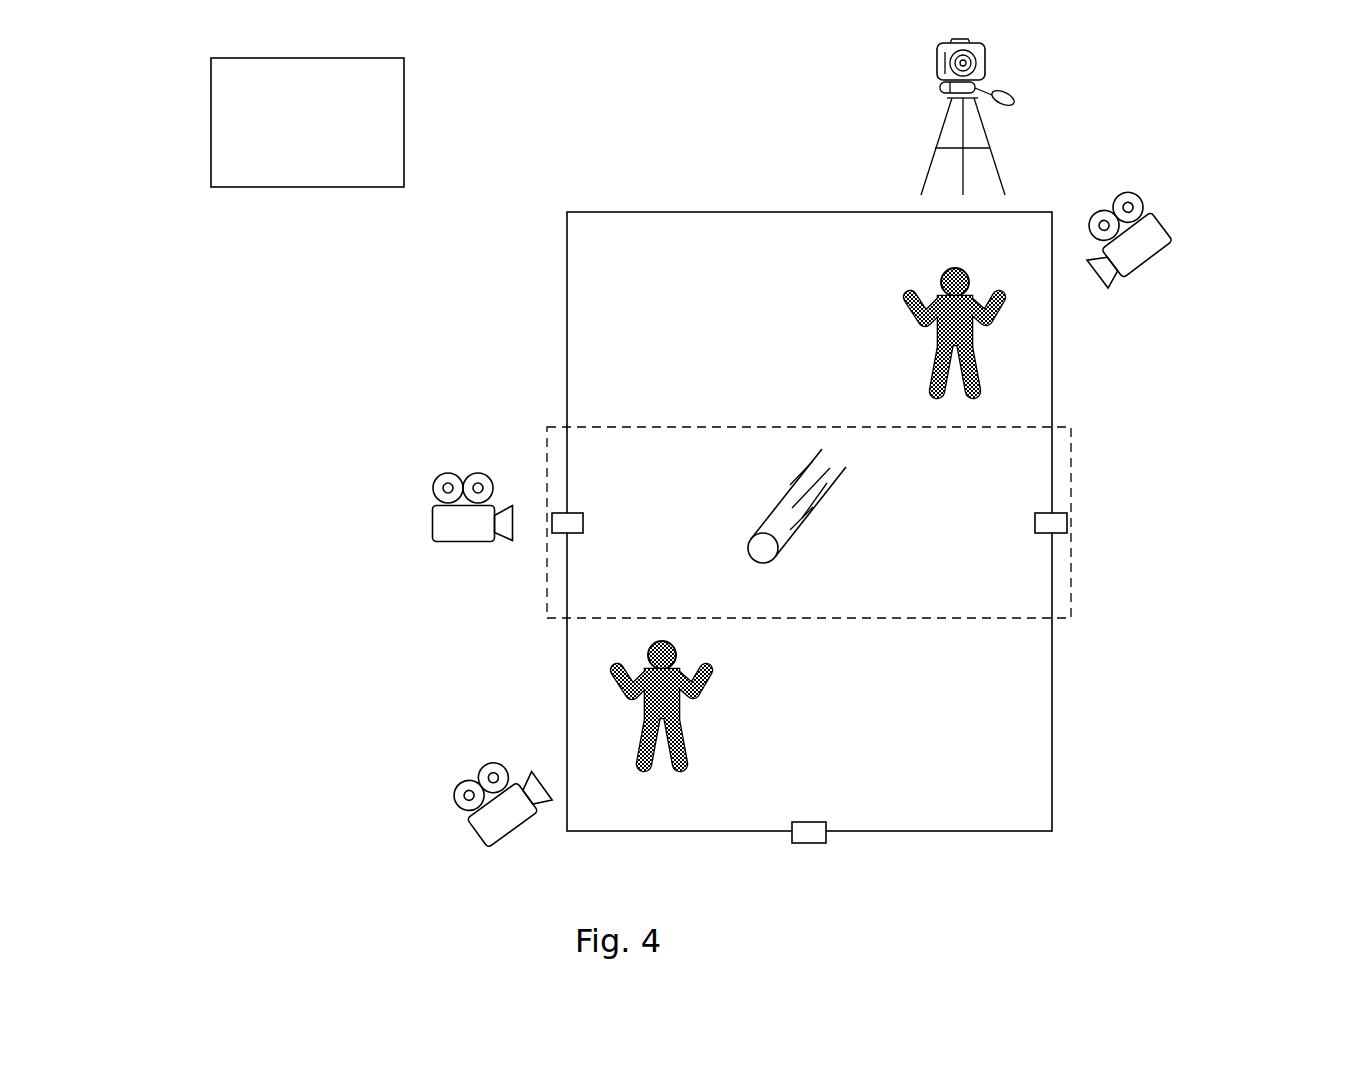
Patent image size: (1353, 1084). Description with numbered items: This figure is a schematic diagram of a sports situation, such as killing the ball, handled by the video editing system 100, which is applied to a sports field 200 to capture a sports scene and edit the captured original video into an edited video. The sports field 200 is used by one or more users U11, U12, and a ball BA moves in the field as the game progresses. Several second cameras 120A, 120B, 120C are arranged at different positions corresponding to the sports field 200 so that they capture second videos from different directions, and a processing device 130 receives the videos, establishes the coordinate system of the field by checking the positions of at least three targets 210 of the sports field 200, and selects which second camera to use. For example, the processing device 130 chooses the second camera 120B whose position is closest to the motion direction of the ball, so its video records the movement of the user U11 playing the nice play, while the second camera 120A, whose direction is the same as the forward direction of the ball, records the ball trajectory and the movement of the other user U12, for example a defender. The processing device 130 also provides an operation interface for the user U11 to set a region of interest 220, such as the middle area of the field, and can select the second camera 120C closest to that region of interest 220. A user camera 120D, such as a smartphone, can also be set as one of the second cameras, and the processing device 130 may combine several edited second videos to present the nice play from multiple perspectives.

The video editing system 100 is at (1264, 82).
The processing device 130 is at (211, 125).
The sports field 200 is at (1053, 776).
The target 210 is at (583, 522).
The region of interest 220 is at (1072, 588).
The second camera 120A is at (1140, 250).
The second camera 120B is at (466, 784).
The second camera 120C is at (447, 474).
The user camera 120D is at (937, 66).
The user U11 is at (937, 345).
The user U12 is at (685, 705).
The ball BA is at (765, 557).